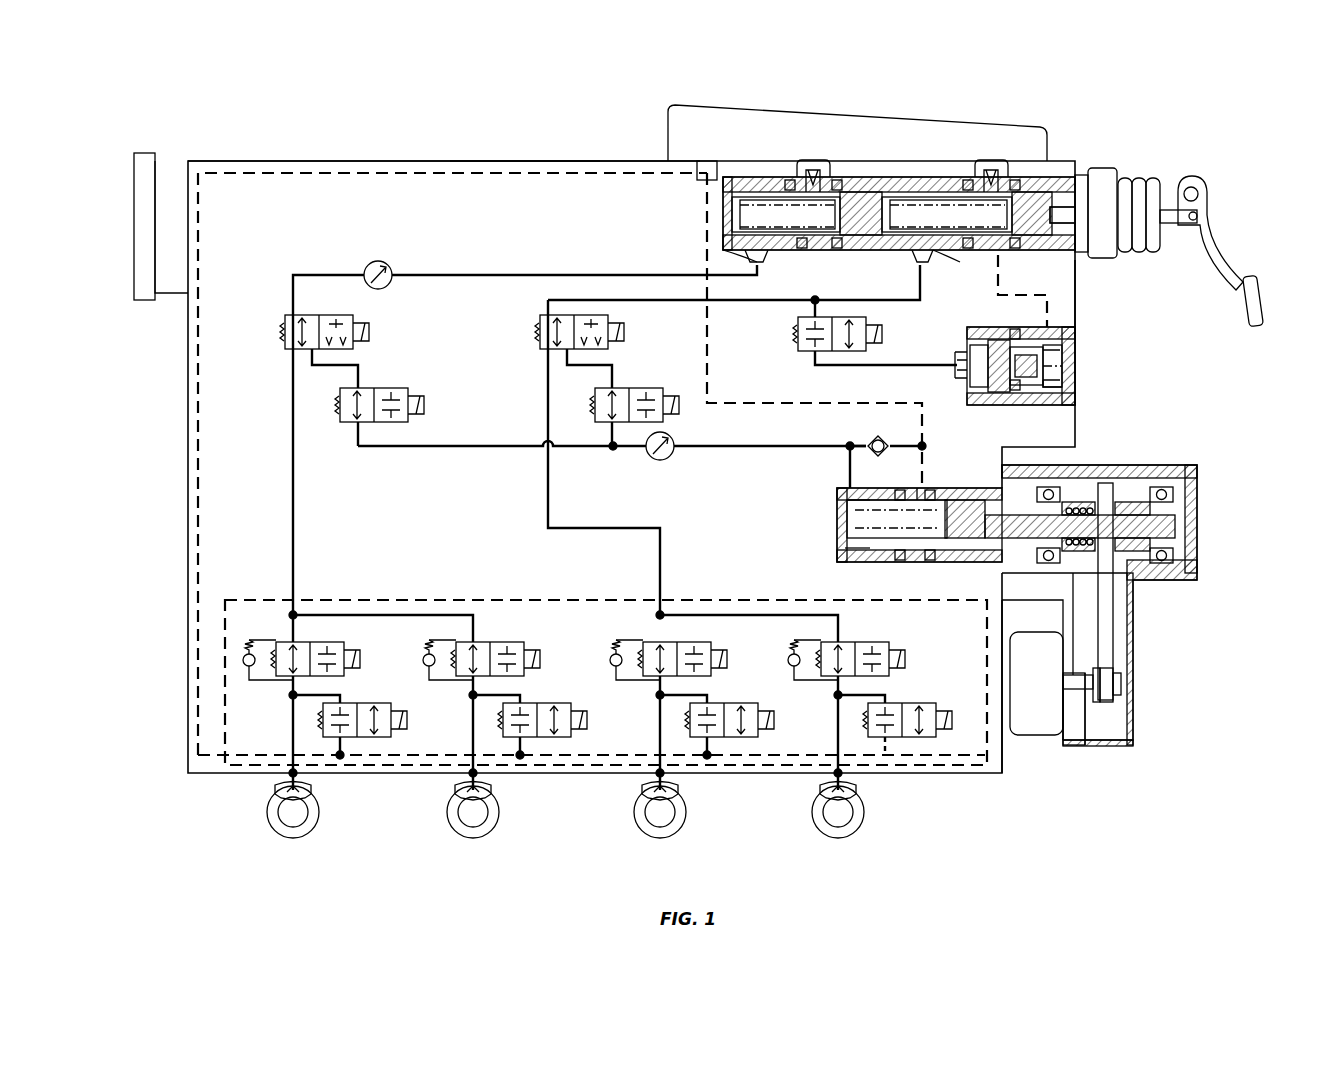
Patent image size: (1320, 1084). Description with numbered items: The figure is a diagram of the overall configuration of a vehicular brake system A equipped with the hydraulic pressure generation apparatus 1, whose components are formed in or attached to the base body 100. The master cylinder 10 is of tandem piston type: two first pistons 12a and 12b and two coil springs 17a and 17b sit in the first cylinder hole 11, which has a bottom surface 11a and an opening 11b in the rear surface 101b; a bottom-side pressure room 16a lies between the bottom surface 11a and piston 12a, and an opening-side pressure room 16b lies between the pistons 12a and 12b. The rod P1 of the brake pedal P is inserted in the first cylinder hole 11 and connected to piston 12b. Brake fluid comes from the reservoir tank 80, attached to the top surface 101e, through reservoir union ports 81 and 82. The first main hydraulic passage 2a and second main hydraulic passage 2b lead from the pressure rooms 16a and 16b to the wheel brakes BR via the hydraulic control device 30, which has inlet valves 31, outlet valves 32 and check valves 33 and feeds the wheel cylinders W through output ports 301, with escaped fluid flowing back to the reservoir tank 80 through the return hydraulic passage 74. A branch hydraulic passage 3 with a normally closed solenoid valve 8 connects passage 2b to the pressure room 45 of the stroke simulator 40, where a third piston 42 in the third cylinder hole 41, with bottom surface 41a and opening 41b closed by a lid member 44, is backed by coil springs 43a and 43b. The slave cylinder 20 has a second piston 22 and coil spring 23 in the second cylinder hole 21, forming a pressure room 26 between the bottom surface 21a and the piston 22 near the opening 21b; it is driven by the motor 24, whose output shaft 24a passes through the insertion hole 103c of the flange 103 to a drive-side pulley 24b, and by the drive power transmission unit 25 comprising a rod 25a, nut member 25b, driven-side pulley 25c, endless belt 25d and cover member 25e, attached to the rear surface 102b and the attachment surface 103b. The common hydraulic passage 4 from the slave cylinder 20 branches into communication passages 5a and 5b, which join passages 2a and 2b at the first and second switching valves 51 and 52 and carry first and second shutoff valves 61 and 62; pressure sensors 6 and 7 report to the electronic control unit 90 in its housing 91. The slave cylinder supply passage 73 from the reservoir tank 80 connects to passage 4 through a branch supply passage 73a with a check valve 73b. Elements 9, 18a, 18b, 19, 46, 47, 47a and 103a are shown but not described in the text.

The hydraulic pressure generation apparatus 1 is at (437, 161).
The base body 100 is at (330, 161).
The top surface 101e is at (510, 161).
The rear surface 101b is at (1076, 290).
The rear surface 102b is at (1003, 760).
The vehicular brake system A is at (270, 136).
The electronic control unit 90 is at (168, 160).
The housing 91 is at (172, 300).
The return hydraulic passage 74 is at (200, 545).
The slave cylinder supply passage 73 is at (708, 395).
The passage 9 is at (998, 305).
The reservoir tank 80 is at (668, 132).
The reservoir union port 81 is at (813, 175).
The reservoir union port 82 is at (998, 175).
The master cylinder 10 is at (935, 185).
The first cylinder hole 11 is at (723, 200).
The bottom surface 11a is at (735, 215).
The opening 11b is at (1100, 200).
The first piston 12a is at (862, 235).
The first piston 12b is at (1035, 205).
The bottom-side pressure room 16a is at (758, 237).
The opening-side pressure room 16b is at (955, 237).
The coil spring 17a is at (735, 250).
The coil spring 17b is at (960, 255).
The first pipe 18a is at (757, 280).
The second pipe 18b is at (920, 280).
The rod chamber 19 is at (1010, 230).
The rod P1 is at (1178, 228).
The brake pedal P is at (1215, 235).
The first main hydraulic passage 2a is at (305, 272).
The second main hydraulic passage 2b is at (645, 308).
The pressure sensor 6 is at (392, 285).
The pressure sensor 7 is at (665, 460).
The first switching valve 51 is at (282, 338).
The second switching valve 52 is at (537, 338).
The first shutoff valve 61 is at (370, 386).
The second shutoff valve 62 is at (607, 386).
The first communication passage 5a is at (410, 449).
The second communication passage 5b is at (610, 440).
The common hydraulic passage 4 is at (790, 448).
The branch supply passage 73a is at (896, 460).
The check valve 73b is at (872, 438).
The normally closed solenoid valve 8 is at (795, 340).
The branch hydraulic passage 3 is at (812, 360).
The stroke simulator 40 is at (1090, 340).
The seal 47a is at (1050, 330).
The inlet port 46 is at (960, 357).
The bottom surface 41a is at (972, 345).
The pressure room 45 is at (985, 380).
The third piston 42 is at (1015, 388).
The coil spring 43a is at (1022, 390).
The coil spring 43b is at (1050, 395).
The lid member 44 is at (1065, 365).
The third cylinder hole 41 is at (1068, 348).
The seal 47 is at (1062, 378).
The opening 41b is at (1068, 392).
The slave cylinder 20 is at (1210, 467).
The second cylinder hole 21 is at (848, 505).
The bottom surface 21a is at (852, 560).
The opening 21b is at (925, 492).
The coil spring 23 is at (875, 562).
The pressure room 26 is at (918, 540).
The second piston 22 is at (958, 540).
The drive power transmission unit 25 is at (1208, 504).
The rod 25a is at (1175, 530).
The nut member 25b is at (1048, 487).
The driven-side pulley 25c is at (1160, 487).
The endless belt 25d is at (1115, 612).
The cover member 25e is at (1130, 652).
The output shaft 24a is at (1122, 684).
The drive-side pulley 24b is at (1130, 675).
The motor 24 is at (1036, 730).
The flange 103 is at (1076, 738).
The bracket portion 103a is at (1062, 725).
The drive power transmission unit attachment surface 103b is at (1088, 715).
The insertion hole 103c is at (1095, 680).
The hydraulic control device 30 is at (496, 595).
The inlet valve 31 is at (348, 648).
The outlet valve 32 is at (360, 703).
The check valve 33 is at (249, 680).
The output port 301 is at (288, 782).
The wheel cylinder W is at (312, 788).
The wheel brake BR is at (327, 828).